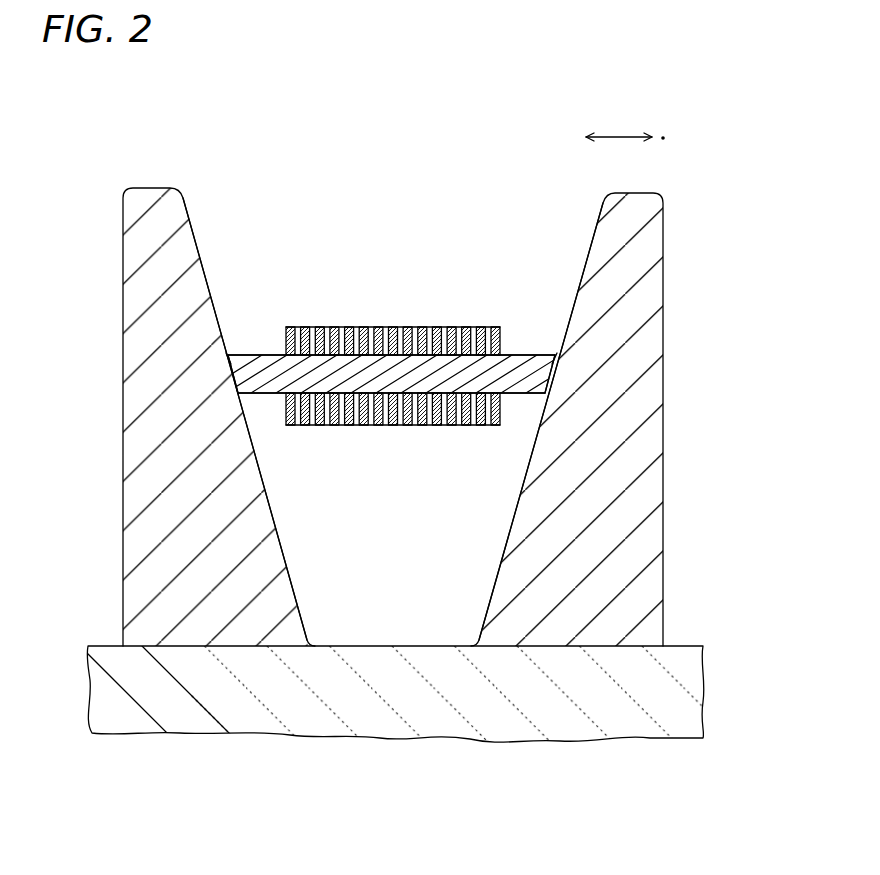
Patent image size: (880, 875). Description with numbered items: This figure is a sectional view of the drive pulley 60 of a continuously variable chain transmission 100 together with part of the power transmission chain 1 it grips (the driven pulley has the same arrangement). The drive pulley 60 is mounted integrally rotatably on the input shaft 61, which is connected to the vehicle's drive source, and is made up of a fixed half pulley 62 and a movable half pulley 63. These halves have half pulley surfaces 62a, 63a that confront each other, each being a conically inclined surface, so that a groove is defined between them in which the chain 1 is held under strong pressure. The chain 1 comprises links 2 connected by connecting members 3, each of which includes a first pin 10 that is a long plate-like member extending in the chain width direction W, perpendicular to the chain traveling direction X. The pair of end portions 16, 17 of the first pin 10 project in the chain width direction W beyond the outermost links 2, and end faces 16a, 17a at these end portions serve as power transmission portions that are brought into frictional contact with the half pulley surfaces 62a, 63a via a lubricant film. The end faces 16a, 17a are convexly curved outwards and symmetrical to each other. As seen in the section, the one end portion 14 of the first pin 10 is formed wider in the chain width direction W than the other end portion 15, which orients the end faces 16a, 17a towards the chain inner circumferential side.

The continuously variable chain transmission 100 is at (469, 97).
The power transmission chain 1 is at (409, 304).
The link 2 is at (300, 326).
The connecting member 3 is at (527, 355).
The first pin 10 is at (515, 398).
The one end portion 14 is at (263, 354).
The other end portion 15 is at (260, 396).
The end portion 16 is at (238, 375).
The end face 16a is at (228, 358).
The end portion 17 is at (548, 383).
The end face 17a is at (557, 360).
The drive pulley 60 is at (193, 144).
The input shaft 61 is at (495, 717).
The fixed half pulley 62 is at (132, 222).
The half pulley surface 62a is at (198, 248).
The movable half pulley 63 is at (660, 230).
The half pulley surface 63a is at (591, 248).
The chain width direction W is at (616, 137).
The chain traveling direction X is at (663, 137).